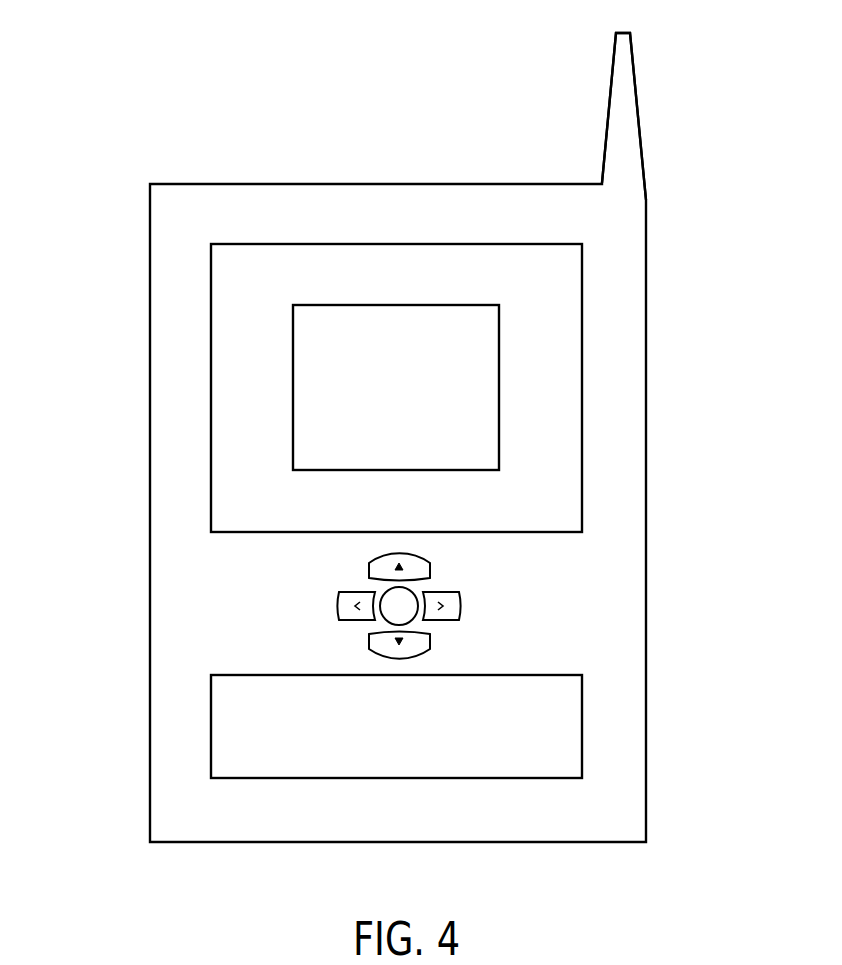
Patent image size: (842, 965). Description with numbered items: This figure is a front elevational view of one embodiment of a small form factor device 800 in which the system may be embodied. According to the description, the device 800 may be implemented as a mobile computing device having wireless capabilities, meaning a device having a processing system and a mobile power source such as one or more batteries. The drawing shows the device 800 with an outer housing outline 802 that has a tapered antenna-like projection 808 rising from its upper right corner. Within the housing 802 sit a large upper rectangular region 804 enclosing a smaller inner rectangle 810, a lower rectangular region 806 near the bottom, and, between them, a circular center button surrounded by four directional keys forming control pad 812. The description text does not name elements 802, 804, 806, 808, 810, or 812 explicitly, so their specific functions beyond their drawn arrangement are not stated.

The small form factor device 800 is at (150, 129).
The housing 802 is at (150, 598).
The display area 804 is at (582, 295).
The lower panel / keypad area 806 is at (582, 726).
The antenna 808 is at (609, 108).
The display window 810 is at (397, 305).
The directional control pad 812 is at (490, 606).